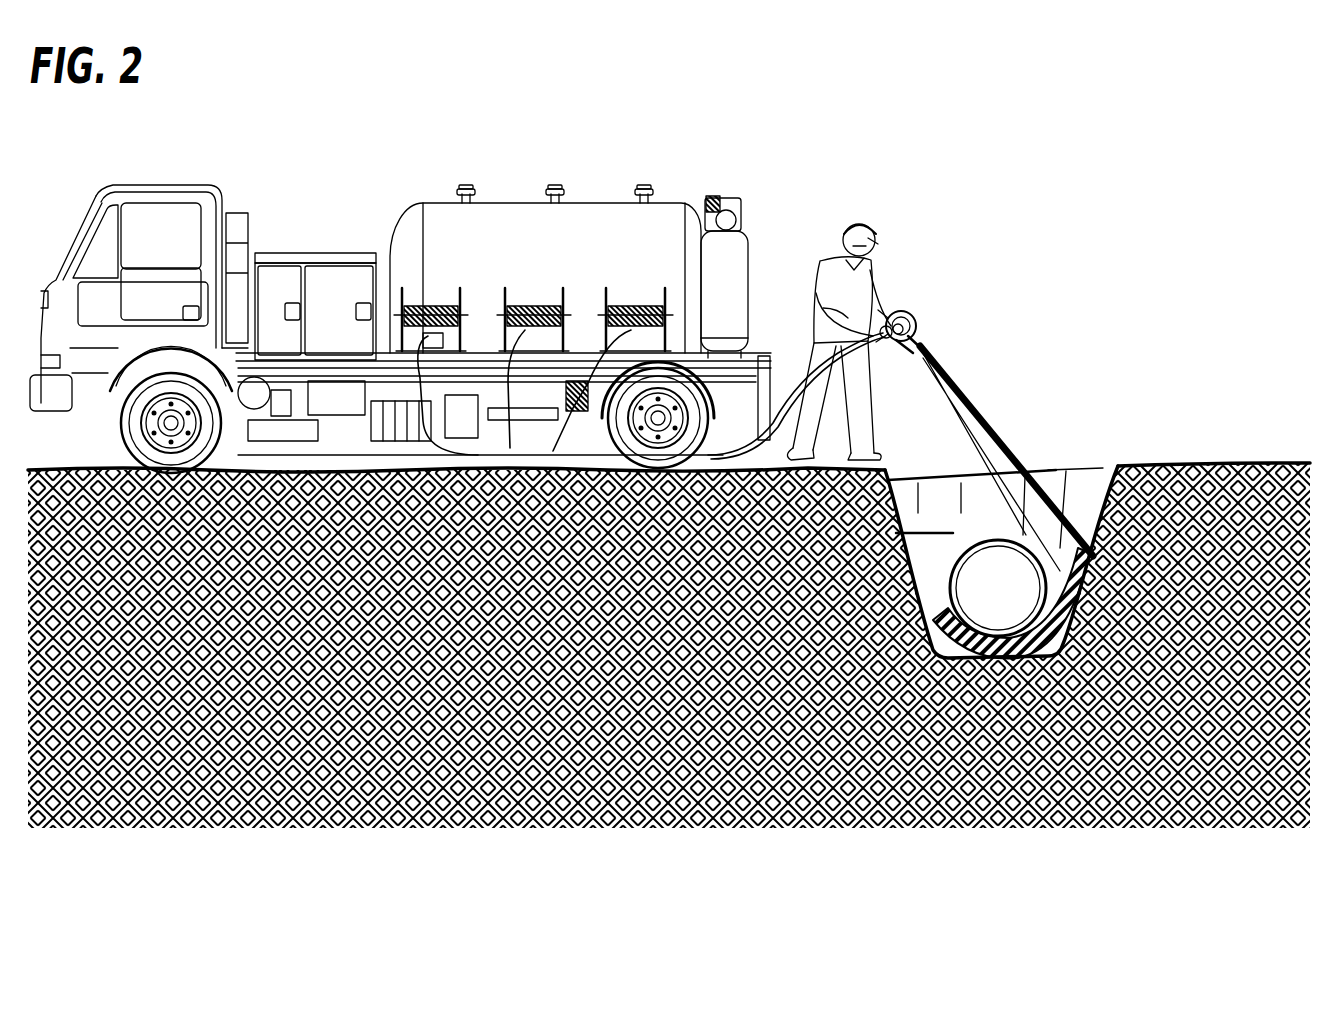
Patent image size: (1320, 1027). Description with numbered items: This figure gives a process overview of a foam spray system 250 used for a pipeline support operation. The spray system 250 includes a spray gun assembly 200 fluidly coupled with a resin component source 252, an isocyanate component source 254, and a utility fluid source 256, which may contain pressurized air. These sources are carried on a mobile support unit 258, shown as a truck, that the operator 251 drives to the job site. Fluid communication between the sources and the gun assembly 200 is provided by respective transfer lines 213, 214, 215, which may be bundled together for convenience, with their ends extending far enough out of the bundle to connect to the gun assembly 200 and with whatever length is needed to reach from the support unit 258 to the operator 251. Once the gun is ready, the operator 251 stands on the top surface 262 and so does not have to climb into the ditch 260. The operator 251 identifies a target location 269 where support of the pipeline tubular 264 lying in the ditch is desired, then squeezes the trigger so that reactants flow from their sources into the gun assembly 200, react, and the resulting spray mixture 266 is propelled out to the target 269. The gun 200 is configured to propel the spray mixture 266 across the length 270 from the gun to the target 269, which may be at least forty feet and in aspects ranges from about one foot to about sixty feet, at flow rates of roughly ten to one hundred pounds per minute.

The spray gun assembly 200 is at (910, 316).
The transfer line 213 is at (613, 298).
The transfer line 214 is at (527, 298).
The transfer line 215 is at (428, 298).
The spray system 250 is at (1170, 108).
The operator 251 is at (816, 254).
The resin component source 252 is at (585, 213).
The isocyanate component source 254 is at (313, 268).
The utility fluid source 256 is at (737, 286).
The support unit 258 is at (103, 183).
The ditch 260 is at (1094, 483).
The top surface 262 is at (1152, 456).
The pipeline tubular 264 is at (927, 537).
The spray mixture 266 is at (996, 412).
The target location 269 is at (965, 628).
The length 270 is at (900, 355).